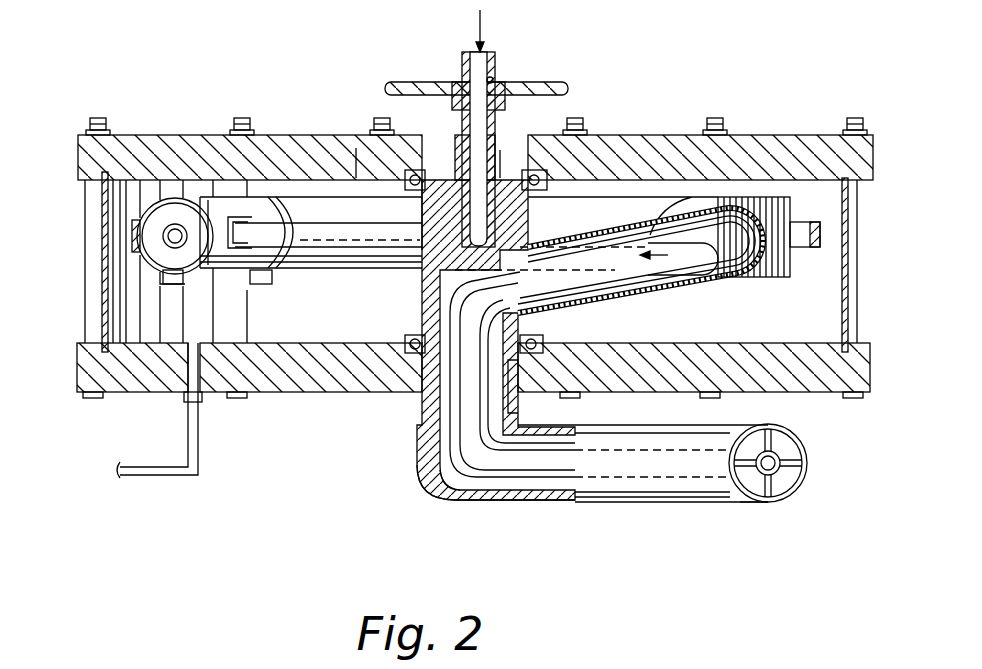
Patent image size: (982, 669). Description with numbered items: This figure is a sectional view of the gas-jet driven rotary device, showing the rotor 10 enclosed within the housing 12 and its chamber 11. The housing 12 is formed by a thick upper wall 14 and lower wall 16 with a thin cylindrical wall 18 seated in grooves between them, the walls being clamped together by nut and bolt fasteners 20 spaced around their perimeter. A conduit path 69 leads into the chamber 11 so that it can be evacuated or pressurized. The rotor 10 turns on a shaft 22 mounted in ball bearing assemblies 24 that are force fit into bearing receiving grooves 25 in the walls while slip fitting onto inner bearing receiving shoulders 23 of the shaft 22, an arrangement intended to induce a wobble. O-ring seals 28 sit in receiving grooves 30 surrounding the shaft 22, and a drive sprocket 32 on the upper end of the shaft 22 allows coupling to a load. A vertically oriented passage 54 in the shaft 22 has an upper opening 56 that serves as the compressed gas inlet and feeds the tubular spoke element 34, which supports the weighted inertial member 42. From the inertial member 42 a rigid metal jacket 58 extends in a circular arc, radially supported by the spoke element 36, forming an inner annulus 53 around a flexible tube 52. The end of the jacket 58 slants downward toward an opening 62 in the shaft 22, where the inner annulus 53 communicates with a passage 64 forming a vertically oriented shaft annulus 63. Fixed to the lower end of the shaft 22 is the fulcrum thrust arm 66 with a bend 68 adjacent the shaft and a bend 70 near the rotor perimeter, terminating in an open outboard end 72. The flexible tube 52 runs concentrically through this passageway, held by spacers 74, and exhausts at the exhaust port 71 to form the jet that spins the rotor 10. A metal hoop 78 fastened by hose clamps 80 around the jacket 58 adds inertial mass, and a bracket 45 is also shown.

The rotor 10 is at (376, 283).
The chamber 11 is at (808, 192).
The housing 12 is at (180, 399).
The upper wall 14 is at (313, 150).
The lower wall 16 is at (283, 372).
The cylindrical wall 18 is at (103, 293).
The nut and bolt fasteners 20 is at (240, 118).
The shaft 22 is at (420, 302).
The inner bearing receiving shoulders 23 is at (400, 130).
The ball bearing assemblies 24 is at (546, 168).
The bearing receiving grooves 25 is at (356, 148).
The O-ring seals 28 is at (450, 162).
The receiving grooves 30 is at (507, 152).
The drive sprocket 32 is at (428, 82).
The spoke element 34 is at (582, 222).
The spoke element 36 is at (323, 236).
The weighted inertial member 42 is at (758, 278).
The bracket 45 is at (160, 274).
The flexible tube 52 is at (193, 272).
The inner annulus 53 is at (530, 487).
The vertically oriented passage 54 is at (492, 80).
The upper opening 56 is at (486, 55).
The tubular conduit or jacket 58 is at (223, 200).
The opening 62 is at (532, 245).
The shaft annulus 63 is at (455, 497).
The passage 64 is at (523, 397).
The fulcrum thrust arm 66 is at (608, 488).
The bend 68 is at (428, 487).
The conduit path 69 is at (163, 478).
The bend 70 is at (749, 507).
The exhaust port 71 is at (828, 455).
The outboard end 72 is at (790, 492).
The spacers 74 is at (790, 476).
The metal hoop 78 is at (135, 237).
The hose clamps 80 is at (165, 255).